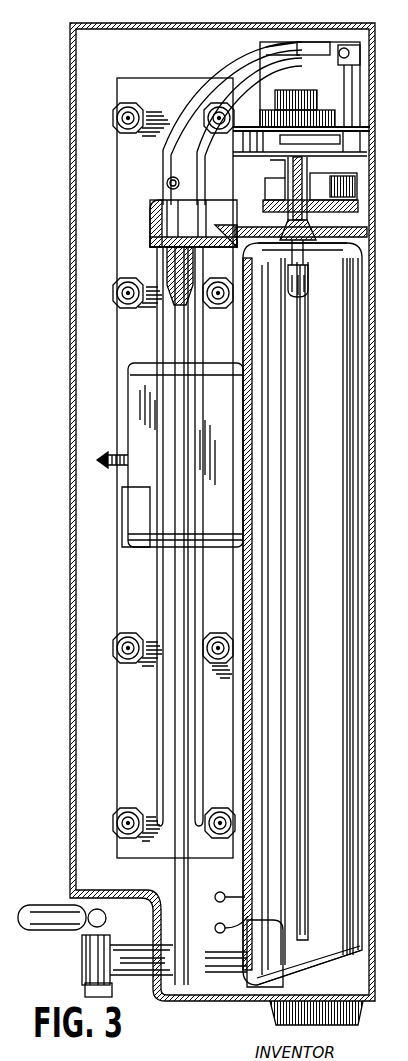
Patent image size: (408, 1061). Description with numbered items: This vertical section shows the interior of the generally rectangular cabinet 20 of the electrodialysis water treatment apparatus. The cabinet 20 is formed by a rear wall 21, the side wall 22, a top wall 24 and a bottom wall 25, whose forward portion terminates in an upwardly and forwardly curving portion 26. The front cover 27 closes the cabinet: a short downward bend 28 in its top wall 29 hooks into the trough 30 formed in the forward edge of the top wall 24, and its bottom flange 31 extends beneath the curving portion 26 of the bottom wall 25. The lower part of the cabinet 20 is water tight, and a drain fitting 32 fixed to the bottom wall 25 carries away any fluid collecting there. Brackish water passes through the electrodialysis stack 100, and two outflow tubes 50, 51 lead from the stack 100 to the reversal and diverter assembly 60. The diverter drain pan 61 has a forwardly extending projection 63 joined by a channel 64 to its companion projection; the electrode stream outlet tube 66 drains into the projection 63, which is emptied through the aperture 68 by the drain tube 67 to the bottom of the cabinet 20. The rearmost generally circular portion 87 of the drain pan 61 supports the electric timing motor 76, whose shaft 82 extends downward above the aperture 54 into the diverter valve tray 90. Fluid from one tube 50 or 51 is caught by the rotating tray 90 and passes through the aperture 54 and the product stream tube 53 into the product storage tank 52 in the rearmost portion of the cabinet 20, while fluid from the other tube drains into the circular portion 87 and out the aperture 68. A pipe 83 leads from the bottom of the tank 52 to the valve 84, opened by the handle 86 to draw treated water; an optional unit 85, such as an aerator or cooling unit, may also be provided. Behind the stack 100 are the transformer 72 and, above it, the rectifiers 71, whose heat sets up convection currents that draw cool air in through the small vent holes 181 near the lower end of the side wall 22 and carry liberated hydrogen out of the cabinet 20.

The cabinet 20 is at (74, 183).
The rear wall 21 is at (372, 560).
The side wall 22 is at (141, 63).
The top wall 24 is at (300, 57).
The bottom wall 25 is at (215, 1000).
The upwardly and forwardly curving portion 26 is at (172, 878).
The front cover 27 is at (72, 516).
The short downward bend 28 is at (270, 60).
The top wall of front cover 29 is at (158, 28).
The trough 30 is at (266, 44).
The bottom flange 31 is at (128, 895).
The drain fitting 32 is at (285, 1020).
The outflow tube 50 is at (160, 166).
The outflow tube 51 is at (208, 95).
The product storage tank 52 is at (248, 715).
The product stream tube 53 is at (304, 545).
The aperture 54 is at (312, 252).
The reversal and diverter assembly 60 is at (203, 155).
The diverter drain pan 61 is at (158, 200).
The forwardly extending projection 63 is at (150, 235).
The channel 64 is at (240, 224).
The electrode stream outlet tube 66 is at (178, 169).
The drain tube 67 is at (190, 885).
The aperture 68 is at (193, 223).
The rectifiers 71 is at (352, 62).
The transformer 72 is at (297, 106).
The electric timing motor 76 is at (326, 140).
The shaft 82 is at (305, 180).
The pipe 83 is at (240, 970).
The valve 84 is at (80, 964).
The unit 85 is at (195, 452).
The handle 86 is at (34, 912).
The generally circular portion 87 is at (267, 170).
The diverter valve tray 90 is at (274, 180).
The electrodialysis stack 100 is at (126, 690).
The vent holes 181 is at (247, 904).